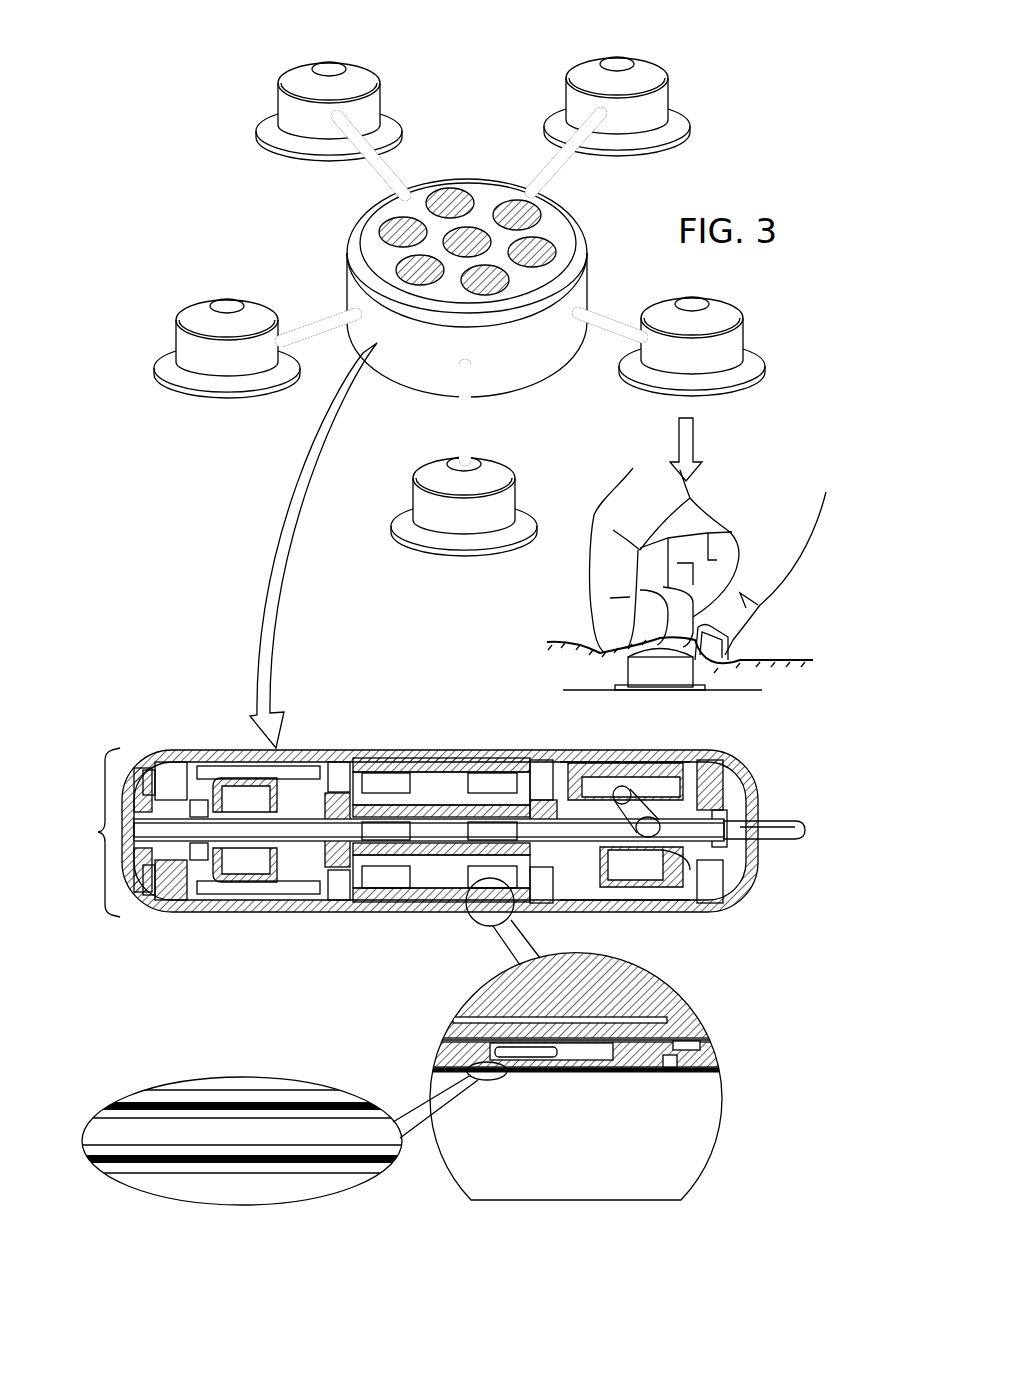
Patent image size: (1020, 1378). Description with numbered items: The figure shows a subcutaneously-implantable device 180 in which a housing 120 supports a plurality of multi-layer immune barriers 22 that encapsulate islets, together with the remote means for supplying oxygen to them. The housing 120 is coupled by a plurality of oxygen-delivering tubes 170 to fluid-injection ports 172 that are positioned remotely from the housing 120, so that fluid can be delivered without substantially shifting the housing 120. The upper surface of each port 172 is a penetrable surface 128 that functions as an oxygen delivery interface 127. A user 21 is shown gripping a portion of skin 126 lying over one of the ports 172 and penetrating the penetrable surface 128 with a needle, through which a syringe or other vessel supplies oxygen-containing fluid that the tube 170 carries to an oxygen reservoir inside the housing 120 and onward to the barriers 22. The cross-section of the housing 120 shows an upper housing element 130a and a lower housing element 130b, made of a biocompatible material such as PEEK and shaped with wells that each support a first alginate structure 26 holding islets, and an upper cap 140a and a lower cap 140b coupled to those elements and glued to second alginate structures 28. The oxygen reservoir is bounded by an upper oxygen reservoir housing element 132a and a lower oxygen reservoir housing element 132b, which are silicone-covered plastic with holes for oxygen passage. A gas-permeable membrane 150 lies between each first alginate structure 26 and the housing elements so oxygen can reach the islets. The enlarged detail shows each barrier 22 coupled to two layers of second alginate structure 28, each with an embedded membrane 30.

The subcutaneously-implantable device 180 is at (180, 162).
The oxygen delivery interface 127 is at (452, 349).
The penetrable surface 128 is at (288, 76).
The fluid-injection port 172 is at (282, 107).
The oxygen-delivering tube 170 is at (388, 168).
The multi-layer immune barrier 22 is at (390, 226).
The housing 120 is at (381, 258).
The user 21 is at (600, 560).
The skin 126 is at (575, 640).
The upper cap 140a is at (160, 752).
The lower cap 140b is at (190, 938).
The upper housing element 130a is at (605, 752).
The lower housing element 130b is at (605, 912).
The upper oxygen reservoir housing element 132a is at (690, 830).
The lower oxygen reservoir housing element 132b is at (670, 880).
The gas-permeable membrane 150 is at (705, 1040).
The first alginate structure 26 is at (553, 1060).
The second alginate structure 28 is at (612, 1070).
The membrane 30 is at (183, 1100).